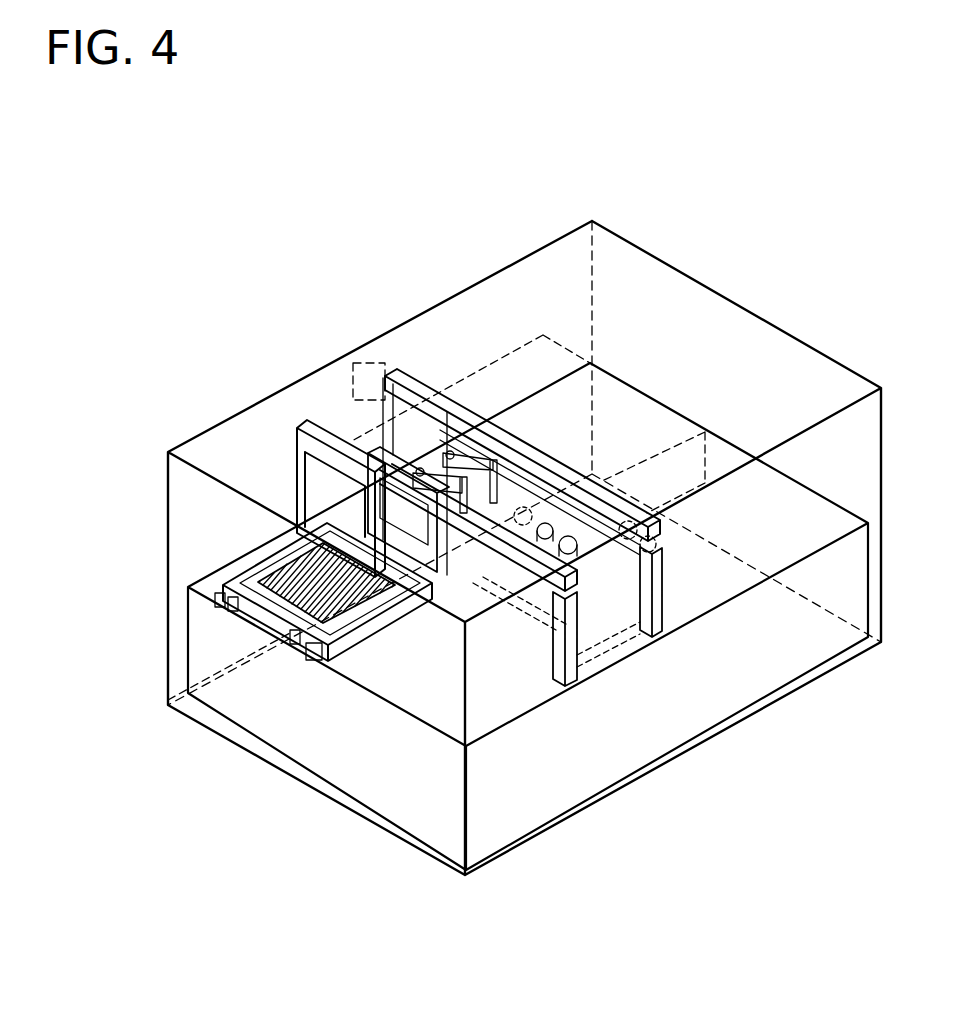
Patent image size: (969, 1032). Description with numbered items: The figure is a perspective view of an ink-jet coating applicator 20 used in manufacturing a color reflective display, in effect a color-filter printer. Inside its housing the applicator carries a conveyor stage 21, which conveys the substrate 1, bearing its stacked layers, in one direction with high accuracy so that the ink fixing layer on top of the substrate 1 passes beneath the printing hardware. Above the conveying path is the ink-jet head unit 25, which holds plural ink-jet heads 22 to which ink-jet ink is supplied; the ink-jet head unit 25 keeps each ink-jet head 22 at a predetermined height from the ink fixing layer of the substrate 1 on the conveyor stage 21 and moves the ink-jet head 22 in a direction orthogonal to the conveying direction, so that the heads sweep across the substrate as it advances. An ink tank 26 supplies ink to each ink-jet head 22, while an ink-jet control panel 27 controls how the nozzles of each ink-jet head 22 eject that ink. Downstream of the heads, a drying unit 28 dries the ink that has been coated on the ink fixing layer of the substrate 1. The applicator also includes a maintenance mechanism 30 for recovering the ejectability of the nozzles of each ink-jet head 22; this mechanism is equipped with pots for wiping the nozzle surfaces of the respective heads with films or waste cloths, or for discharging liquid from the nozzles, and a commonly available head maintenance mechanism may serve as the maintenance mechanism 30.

The substrate 1 is at (297, 580).
The ink-jet coating applicator 20 is at (405, 320).
The conveyor stage 21 is at (290, 630).
The ink-jet head 22 is at (400, 453).
The ink-jet head unit 25 is at (297, 470).
The ink tank 26 is at (628, 568).
The ink-jet control panel 27 is at (312, 740).
The drying unit 28 is at (613, 410).
The maintenance mechanism 30 is at (572, 655).